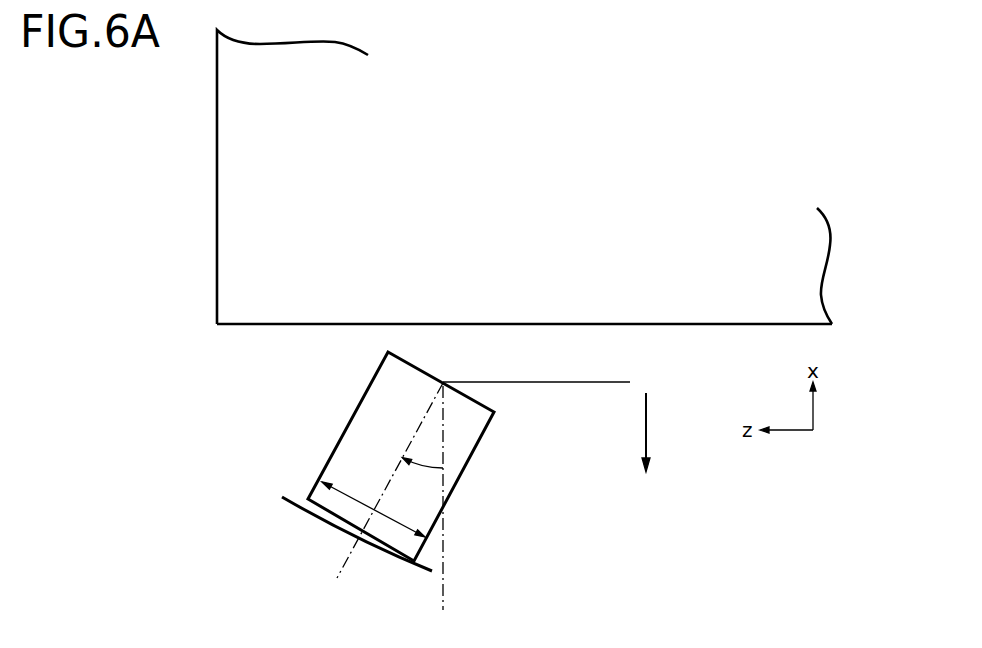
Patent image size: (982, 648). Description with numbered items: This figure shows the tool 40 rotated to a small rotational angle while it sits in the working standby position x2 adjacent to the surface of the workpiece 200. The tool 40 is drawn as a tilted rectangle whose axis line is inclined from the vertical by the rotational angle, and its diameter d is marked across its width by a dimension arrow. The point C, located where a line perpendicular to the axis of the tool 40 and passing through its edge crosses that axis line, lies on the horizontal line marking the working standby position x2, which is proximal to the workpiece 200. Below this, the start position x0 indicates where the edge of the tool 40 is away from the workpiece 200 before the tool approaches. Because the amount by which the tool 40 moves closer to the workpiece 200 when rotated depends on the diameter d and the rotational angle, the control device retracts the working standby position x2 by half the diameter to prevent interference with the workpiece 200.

The workpiece 200 is at (233, 175).
The tool 40 is at (463, 437).
The point C is at (443, 383).
The working standby position x2 is at (551, 421).
The start position x0 is at (645, 517).
The diameter of the tool d is at (350, 494).